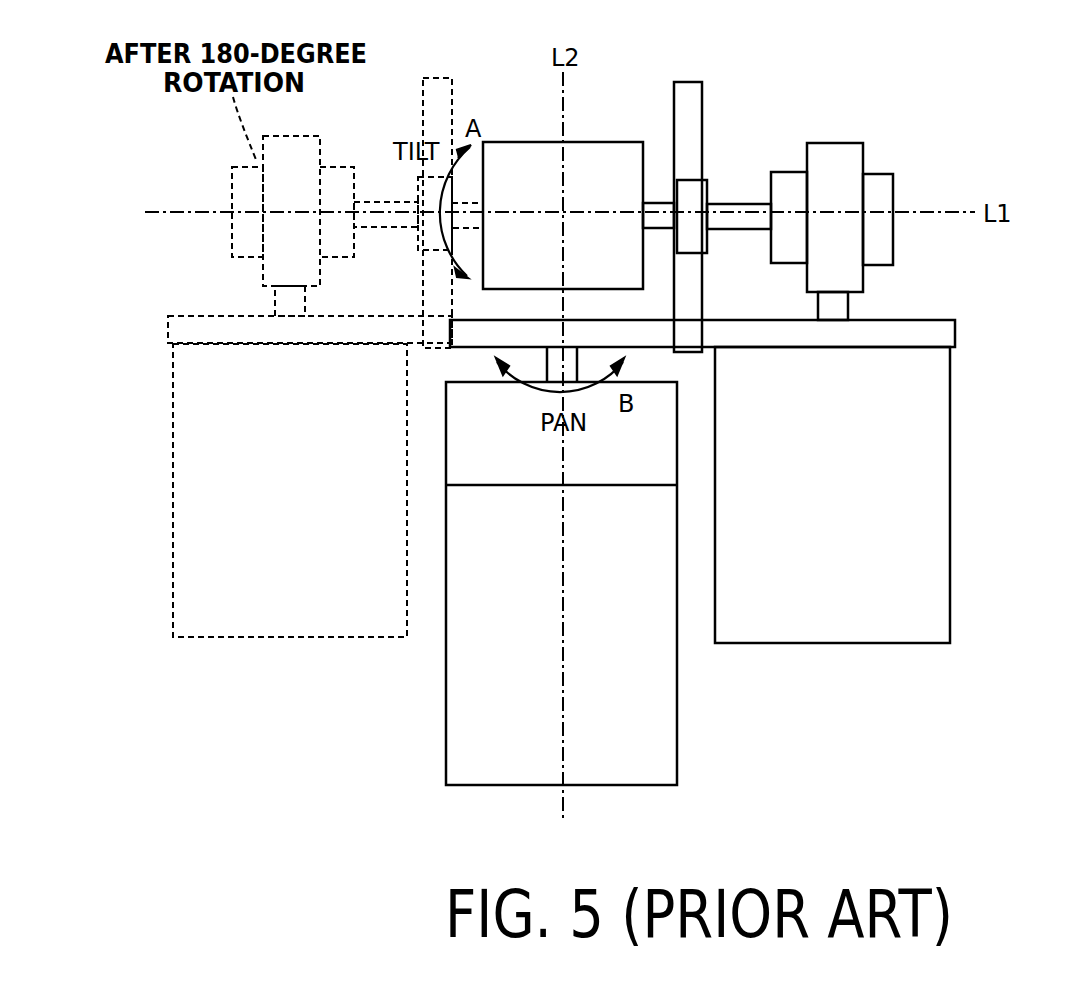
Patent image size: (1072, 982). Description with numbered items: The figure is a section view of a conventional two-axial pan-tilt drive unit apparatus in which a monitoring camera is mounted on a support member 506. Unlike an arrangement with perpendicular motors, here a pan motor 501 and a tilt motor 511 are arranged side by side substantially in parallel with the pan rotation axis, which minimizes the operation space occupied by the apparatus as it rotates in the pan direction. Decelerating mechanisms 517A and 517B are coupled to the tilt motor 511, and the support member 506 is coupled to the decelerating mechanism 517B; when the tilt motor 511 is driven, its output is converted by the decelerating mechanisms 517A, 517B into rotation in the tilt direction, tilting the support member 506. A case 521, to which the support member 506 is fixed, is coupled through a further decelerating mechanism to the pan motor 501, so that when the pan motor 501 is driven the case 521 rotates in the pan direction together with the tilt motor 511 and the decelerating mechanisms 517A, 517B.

The pan motor 501 is at (447, 441).
The support member 506 is at (626, 148).
The tilt motor 511 is at (947, 523).
The decelerating mechanism 517A is at (857, 166).
The decelerating mechanism 517B is at (792, 180).
The case 521 is at (694, 297).